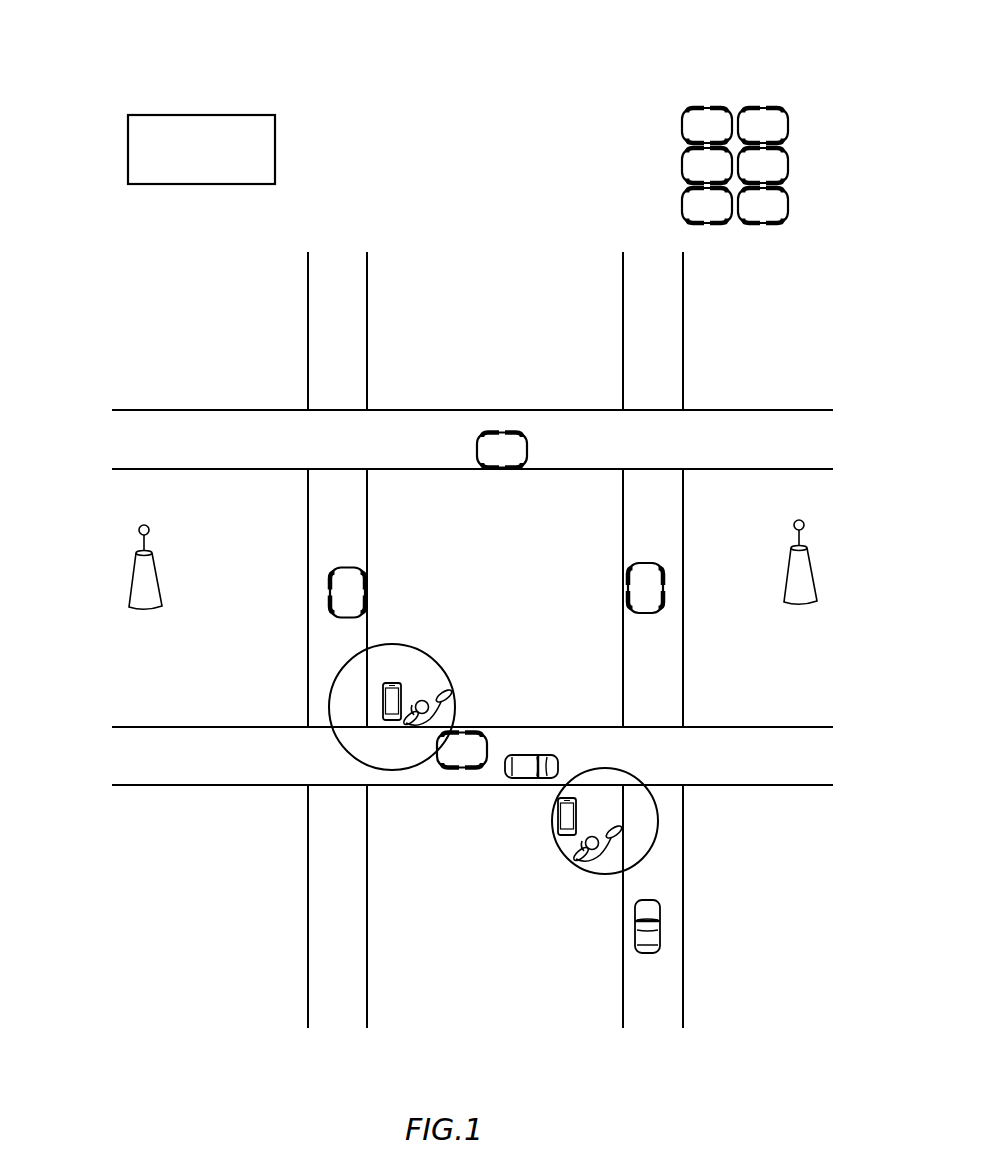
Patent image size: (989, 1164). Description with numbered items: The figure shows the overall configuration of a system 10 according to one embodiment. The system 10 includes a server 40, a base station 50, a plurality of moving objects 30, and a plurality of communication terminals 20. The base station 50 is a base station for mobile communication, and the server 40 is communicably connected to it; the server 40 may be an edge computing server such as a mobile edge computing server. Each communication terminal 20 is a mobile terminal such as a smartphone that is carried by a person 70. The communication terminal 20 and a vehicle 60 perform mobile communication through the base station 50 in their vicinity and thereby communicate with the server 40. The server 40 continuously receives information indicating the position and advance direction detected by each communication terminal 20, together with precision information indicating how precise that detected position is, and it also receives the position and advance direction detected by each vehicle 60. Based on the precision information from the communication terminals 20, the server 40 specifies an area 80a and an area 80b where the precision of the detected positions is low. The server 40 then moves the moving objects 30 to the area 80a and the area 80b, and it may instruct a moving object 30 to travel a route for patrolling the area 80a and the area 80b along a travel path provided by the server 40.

The system 10 is at (56, 78).
The communication terminal 20 is at (391, 683).
The moving object 30 is at (682, 128).
The server 40 is at (233, 115).
The base station 50 is at (136, 552).
The vehicle 60 is at (530, 780).
The person 70 is at (450, 700).
The area 80a is at (658, 824).
The area 80b is at (437, 662).